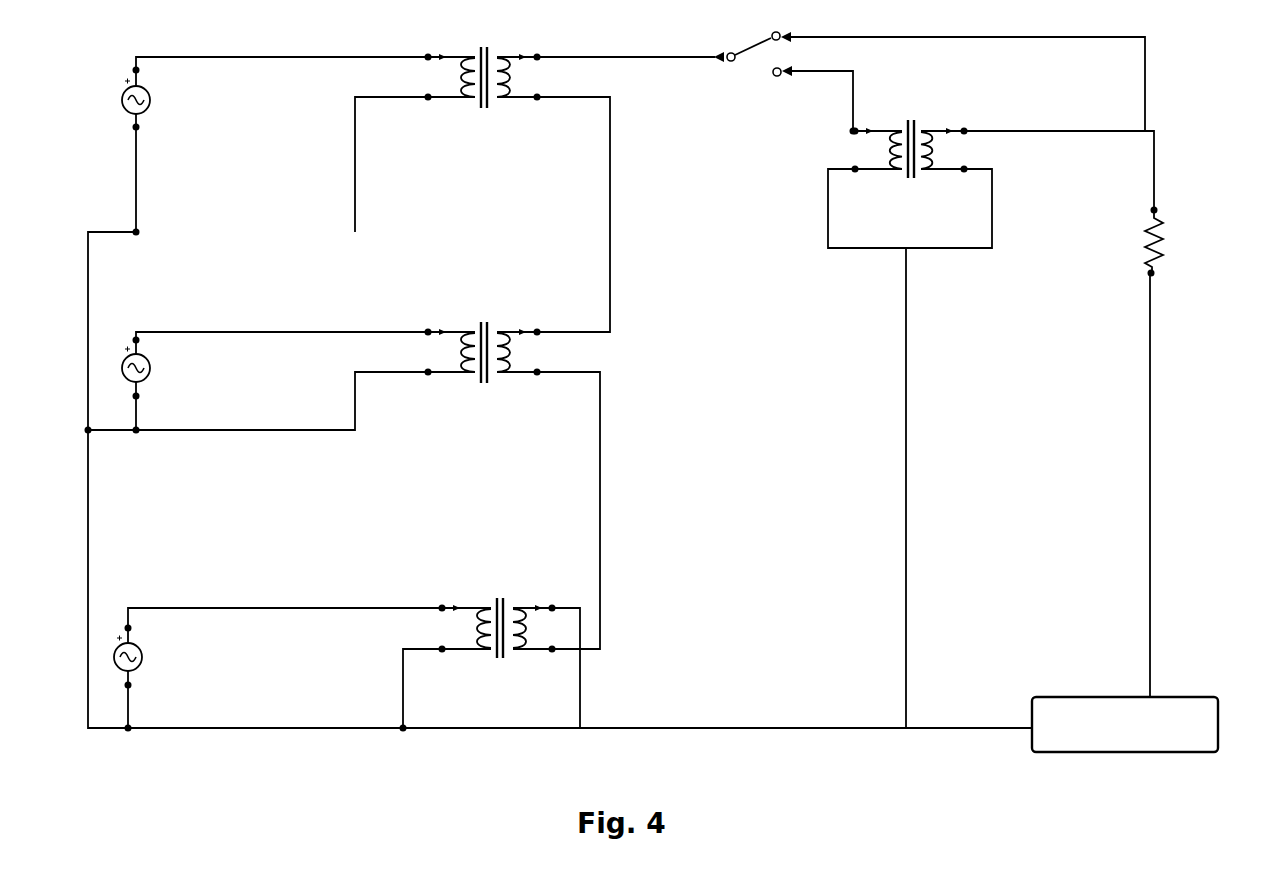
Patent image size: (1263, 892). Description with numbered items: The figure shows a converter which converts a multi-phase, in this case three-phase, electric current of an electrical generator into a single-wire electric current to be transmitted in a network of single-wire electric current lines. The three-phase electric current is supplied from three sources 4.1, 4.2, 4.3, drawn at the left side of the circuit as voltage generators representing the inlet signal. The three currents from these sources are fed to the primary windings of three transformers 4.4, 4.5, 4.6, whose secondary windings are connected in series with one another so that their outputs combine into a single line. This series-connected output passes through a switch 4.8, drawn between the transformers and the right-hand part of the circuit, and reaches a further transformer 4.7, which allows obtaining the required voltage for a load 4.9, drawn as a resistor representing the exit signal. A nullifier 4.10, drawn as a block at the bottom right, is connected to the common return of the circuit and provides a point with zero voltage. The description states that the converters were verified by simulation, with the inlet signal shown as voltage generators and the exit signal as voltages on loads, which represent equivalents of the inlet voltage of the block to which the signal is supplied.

The source 4.1 is at (155, 125).
The source 4.2 is at (155, 381).
The source 4.3 is at (145, 675).
The transformer 4.4 is at (472, 109).
The transformer 4.5 is at (472, 389).
The transformer 4.6 is at (472, 666).
The transformer 4.7 is at (917, 119).
The switch 4.8 is at (737, 94).
The load 4.9 is at (1124, 267).
The nullifier 4.10 is at (1069, 683).